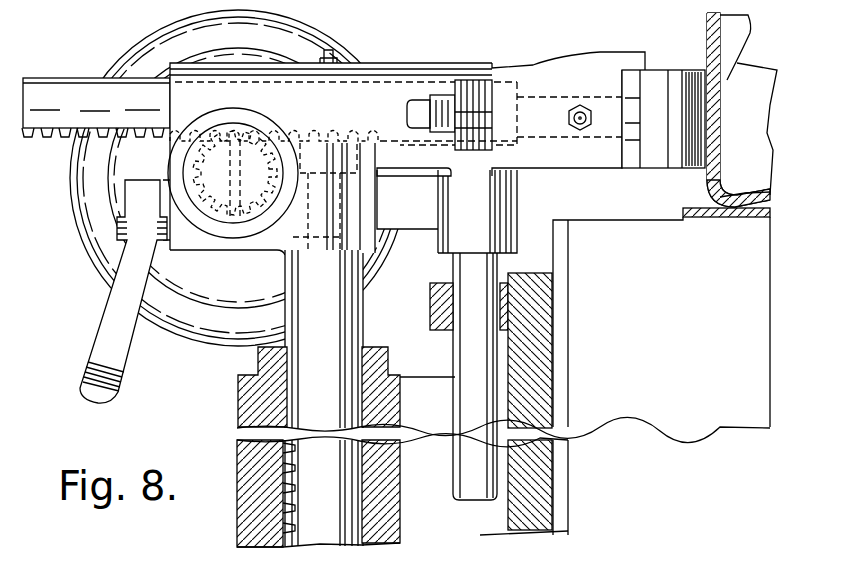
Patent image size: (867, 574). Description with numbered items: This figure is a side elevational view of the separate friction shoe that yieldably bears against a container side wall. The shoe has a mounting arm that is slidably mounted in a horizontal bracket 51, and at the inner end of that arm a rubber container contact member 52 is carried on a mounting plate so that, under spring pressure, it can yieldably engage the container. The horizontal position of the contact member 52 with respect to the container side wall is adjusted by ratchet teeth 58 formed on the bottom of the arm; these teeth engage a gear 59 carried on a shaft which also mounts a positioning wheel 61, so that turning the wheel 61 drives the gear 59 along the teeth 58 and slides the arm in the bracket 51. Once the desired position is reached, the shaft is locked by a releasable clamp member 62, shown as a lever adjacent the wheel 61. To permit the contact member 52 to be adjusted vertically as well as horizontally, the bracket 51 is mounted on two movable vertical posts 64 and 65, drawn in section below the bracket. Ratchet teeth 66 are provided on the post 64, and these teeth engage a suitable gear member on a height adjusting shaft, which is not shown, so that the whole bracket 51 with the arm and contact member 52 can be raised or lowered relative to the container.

The horizontal bracket 51 is at (432, 73).
The rubber container contact member 52 is at (686, 72).
The ratchet teeth 58 is at (65, 138).
The gear 59 is at (291, 136).
The positioning wheel 61 is at (218, 338).
The releasable clamp member 62 is at (120, 343).
The vertical post 64 is at (353, 313).
The vertical post 65 is at (461, 366).
The ratchet teeth 66 is at (240, 500).